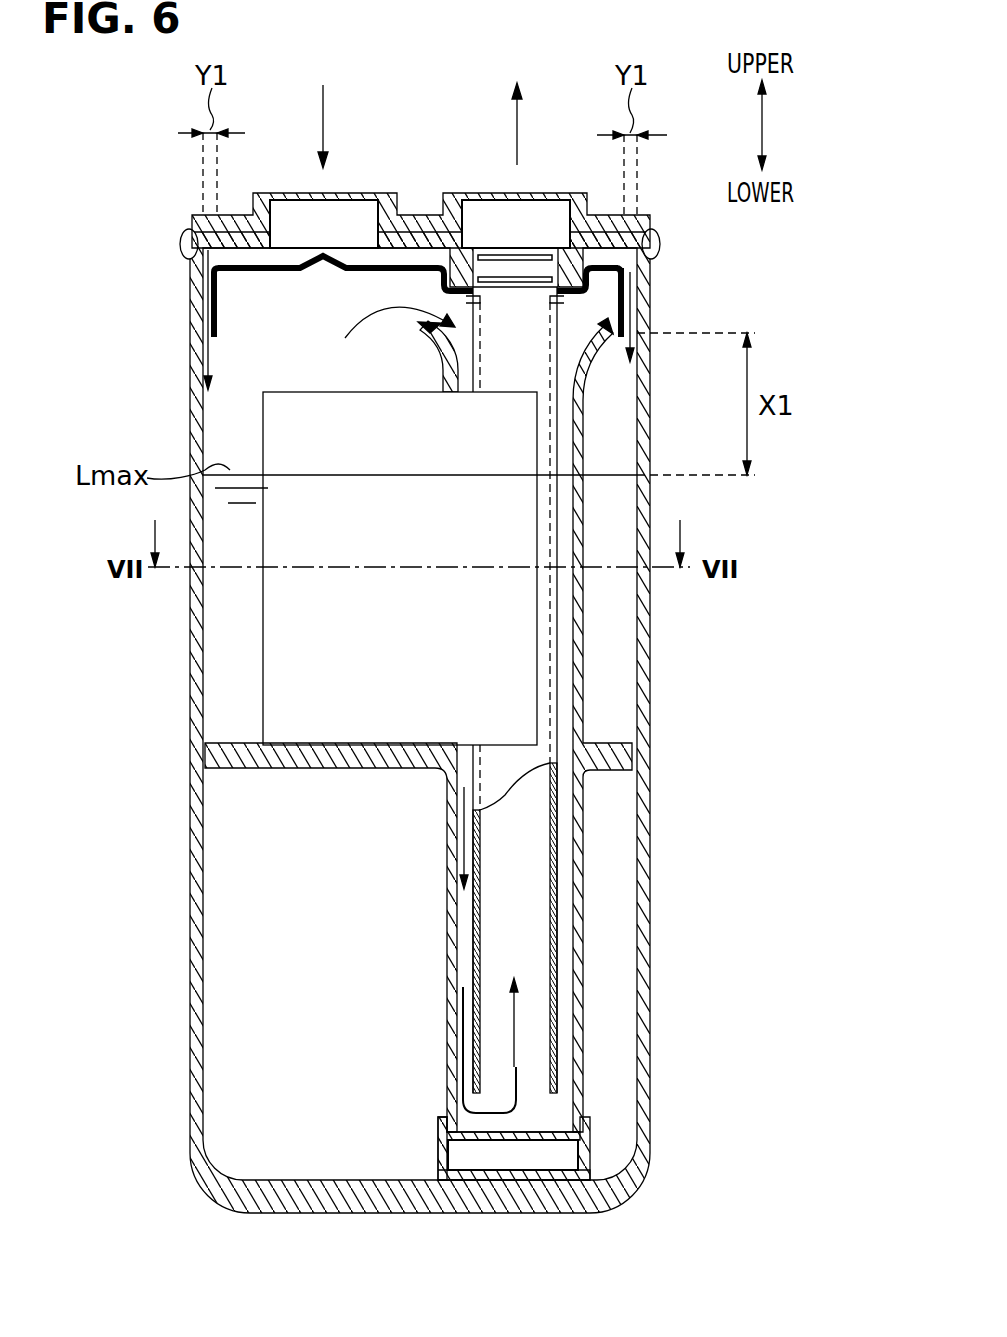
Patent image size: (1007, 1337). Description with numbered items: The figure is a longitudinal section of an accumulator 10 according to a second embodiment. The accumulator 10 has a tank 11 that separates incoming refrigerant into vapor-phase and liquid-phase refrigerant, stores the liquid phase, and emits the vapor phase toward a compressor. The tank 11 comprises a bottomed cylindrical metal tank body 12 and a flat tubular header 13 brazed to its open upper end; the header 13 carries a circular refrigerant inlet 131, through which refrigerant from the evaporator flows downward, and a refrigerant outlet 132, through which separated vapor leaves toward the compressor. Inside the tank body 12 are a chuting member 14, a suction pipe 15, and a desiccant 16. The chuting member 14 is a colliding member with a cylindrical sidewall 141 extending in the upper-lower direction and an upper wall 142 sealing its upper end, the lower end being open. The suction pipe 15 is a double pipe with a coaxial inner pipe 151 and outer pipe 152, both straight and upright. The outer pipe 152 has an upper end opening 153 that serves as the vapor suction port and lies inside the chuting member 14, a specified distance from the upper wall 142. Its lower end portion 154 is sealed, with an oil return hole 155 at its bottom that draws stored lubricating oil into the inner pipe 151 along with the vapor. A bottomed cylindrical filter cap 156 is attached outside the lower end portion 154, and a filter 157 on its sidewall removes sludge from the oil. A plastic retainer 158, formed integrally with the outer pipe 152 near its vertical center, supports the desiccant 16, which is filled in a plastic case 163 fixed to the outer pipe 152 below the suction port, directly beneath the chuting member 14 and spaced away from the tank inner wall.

The accumulator 10 is at (425, 691).
The tank 11 is at (353, 703).
The tank body 12 is at (195, 295).
The header 13 is at (250, 258).
The refrigerant inlet 131 is at (347, 213).
The refrigerant outlet 132 is at (495, 213).
The chuting member 14 is at (355, 352).
The sidewall 141 is at (223, 340).
The upper wall 142 is at (282, 271).
The suction pipe 15 is at (633, 725).
The inner pipe 151 is at (574, 862).
The outer pipe 152 is at (582, 908).
The upper end opening 153 is at (567, 343).
The lower end portion 154 is at (545, 1127).
The oil return hole 155 is at (514, 1141).
The filter cap 156 is at (480, 1176).
The filter 157 is at (441, 1157).
The retainer 158 is at (260, 744).
The desiccant 16 is at (512, 648).
The case 163 is at (545, 602).